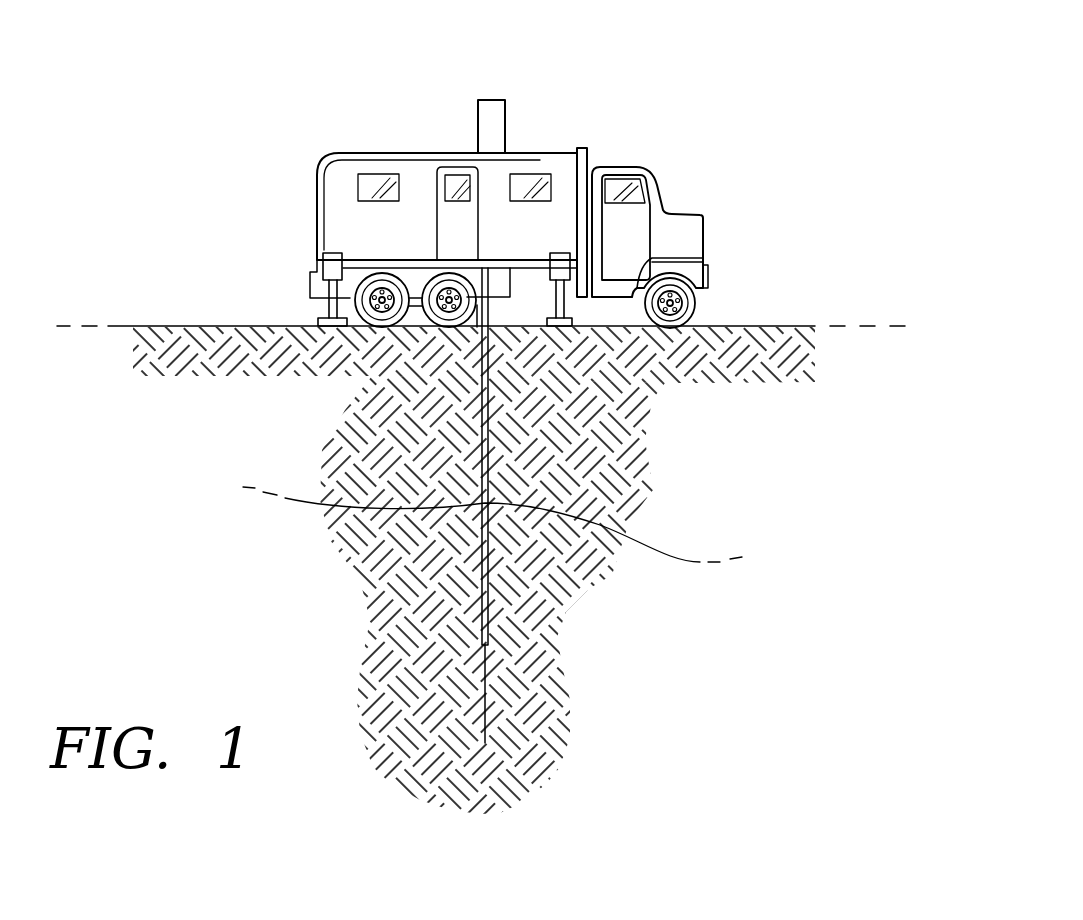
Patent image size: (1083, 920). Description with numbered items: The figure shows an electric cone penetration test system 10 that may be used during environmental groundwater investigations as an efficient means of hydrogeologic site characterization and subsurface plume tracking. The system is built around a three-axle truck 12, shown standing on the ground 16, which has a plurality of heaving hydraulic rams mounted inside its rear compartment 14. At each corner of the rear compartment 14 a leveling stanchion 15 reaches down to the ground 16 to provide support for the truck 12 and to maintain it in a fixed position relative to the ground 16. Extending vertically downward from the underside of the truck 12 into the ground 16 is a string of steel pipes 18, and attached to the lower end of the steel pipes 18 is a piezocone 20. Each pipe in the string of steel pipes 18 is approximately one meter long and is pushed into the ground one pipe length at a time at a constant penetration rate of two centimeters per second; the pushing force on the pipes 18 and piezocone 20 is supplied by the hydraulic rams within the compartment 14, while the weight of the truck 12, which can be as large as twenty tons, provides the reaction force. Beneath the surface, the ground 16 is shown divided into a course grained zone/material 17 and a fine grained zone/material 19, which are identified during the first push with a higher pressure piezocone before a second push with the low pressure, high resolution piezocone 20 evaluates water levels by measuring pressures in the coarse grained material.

The electric cone penetration test system 10 is at (683, 142).
The 3-axle truck 12 is at (615, 166).
The rear compartment 14 is at (398, 152).
The leveling stanchion 15 is at (327, 293).
The ground 16 is at (202, 326).
The course grained zone/material 17 is at (380, 443).
The string of steel pipes 18 is at (490, 428).
The fine grained zone/material 19 is at (383, 585).
The piezocone 20 is at (487, 697).